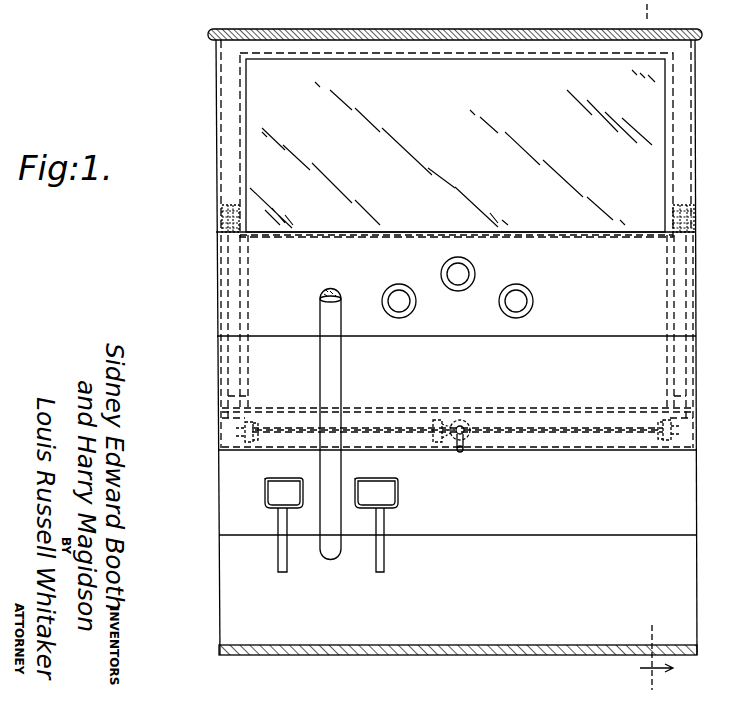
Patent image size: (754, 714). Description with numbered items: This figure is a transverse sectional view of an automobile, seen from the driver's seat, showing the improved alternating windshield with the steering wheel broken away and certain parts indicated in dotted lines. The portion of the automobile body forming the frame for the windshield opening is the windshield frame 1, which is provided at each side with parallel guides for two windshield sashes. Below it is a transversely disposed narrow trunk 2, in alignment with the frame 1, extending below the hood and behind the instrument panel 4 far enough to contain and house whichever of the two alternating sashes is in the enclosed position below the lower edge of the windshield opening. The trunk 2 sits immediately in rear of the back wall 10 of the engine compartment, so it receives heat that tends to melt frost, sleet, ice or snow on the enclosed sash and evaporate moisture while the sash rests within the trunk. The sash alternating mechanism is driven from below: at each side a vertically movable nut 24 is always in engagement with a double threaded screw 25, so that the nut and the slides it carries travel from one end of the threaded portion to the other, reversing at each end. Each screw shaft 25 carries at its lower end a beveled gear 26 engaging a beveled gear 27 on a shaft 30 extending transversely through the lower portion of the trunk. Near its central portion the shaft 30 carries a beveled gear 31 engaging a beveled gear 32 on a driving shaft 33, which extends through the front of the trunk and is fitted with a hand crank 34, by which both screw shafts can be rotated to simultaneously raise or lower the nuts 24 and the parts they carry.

The windshield frame 1 is at (232, 93).
The trunk 2 is at (524, 380).
The instrument panel 4 is at (590, 285).
The back wall of the engine compartment 10 is at (457, 472).
The vertically movable nut 24 is at (217, 230).
The double threaded screw 25 is at (226, 378).
The beveled gear 26 is at (236, 424).
The beveled gear 27 is at (240, 442).
The shaft 30 is at (530, 434).
The beveled gear 31 is at (452, 436).
The beveled gear 32 is at (450, 420).
The driving shaft 33 is at (464, 427).
The hand crank 34 is at (460, 453).